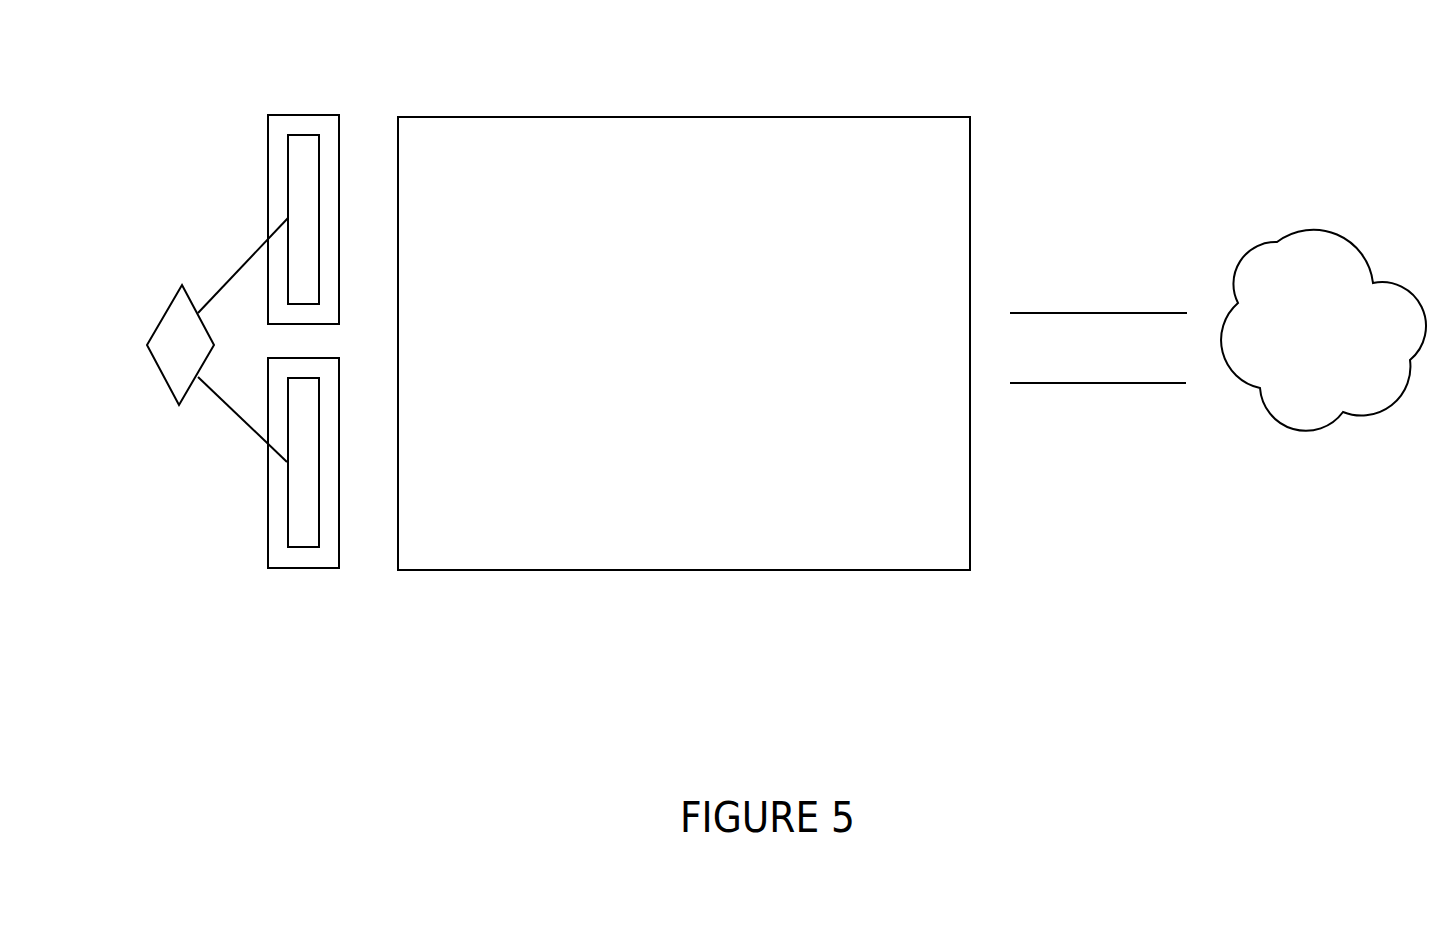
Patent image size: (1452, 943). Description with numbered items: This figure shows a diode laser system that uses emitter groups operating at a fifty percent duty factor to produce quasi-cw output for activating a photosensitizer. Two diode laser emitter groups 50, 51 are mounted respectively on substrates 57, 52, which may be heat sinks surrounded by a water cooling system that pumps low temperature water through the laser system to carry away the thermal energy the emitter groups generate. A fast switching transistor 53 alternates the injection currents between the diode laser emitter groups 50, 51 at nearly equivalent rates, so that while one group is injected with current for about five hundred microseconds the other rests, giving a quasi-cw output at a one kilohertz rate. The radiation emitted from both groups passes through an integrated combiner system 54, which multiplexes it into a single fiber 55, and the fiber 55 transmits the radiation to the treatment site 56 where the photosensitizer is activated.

The diode laser emitter group 50 is at (305, 152).
The diode laser emitter group 51 is at (303, 537).
The substrate 52 is at (278, 547).
The fast switching transistor 53 is at (176, 360).
The integrated combiner system 54 is at (580, 538).
The fiber 55 is at (1117, 367).
The treatment site 56 is at (1310, 407).
The substrate 57 is at (280, 172).